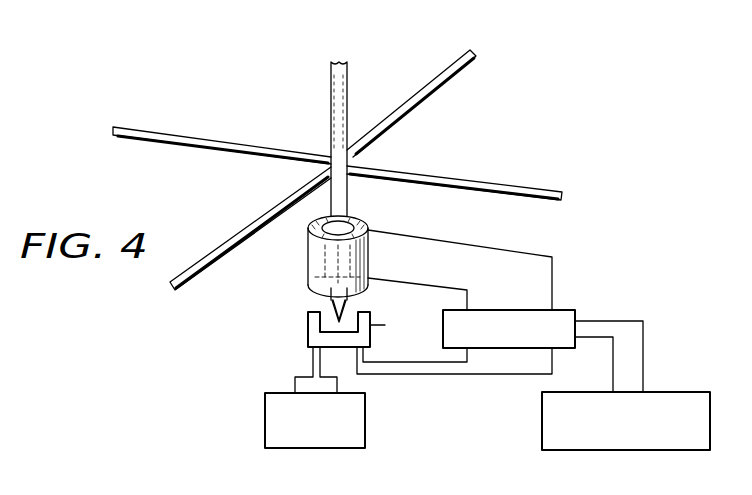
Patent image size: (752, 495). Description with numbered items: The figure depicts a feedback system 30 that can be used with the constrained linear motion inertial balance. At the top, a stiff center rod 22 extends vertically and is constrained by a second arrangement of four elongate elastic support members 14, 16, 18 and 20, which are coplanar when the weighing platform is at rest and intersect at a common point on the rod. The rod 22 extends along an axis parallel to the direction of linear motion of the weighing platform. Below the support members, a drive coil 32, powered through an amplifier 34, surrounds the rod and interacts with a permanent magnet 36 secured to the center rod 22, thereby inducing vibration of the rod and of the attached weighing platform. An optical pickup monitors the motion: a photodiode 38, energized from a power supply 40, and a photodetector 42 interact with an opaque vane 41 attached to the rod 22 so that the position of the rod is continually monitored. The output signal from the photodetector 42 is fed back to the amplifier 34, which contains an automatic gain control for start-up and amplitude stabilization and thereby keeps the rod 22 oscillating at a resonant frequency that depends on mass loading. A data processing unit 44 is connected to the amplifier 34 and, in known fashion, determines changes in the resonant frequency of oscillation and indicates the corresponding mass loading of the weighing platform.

The elongate elastic support member 14 is at (405, 105).
The elongate elastic support member 16 is at (483, 183).
The elongate elastic support member 18 is at (253, 219).
The elongate elastic support member 20 is at (163, 129).
The center rod 22 is at (331, 85).
The feedback system 30 is at (640, 289).
The drive coil 32 is at (310, 282).
The amplifier 34 is at (567, 310).
The permanent magnet 36 is at (308, 236).
The photodiode 38 is at (311, 320).
The power supply 40 is at (265, 418).
The opaque vane 41 is at (345, 318).
The photodetector 42 is at (385, 328).
The data processing unit 44 is at (660, 392).